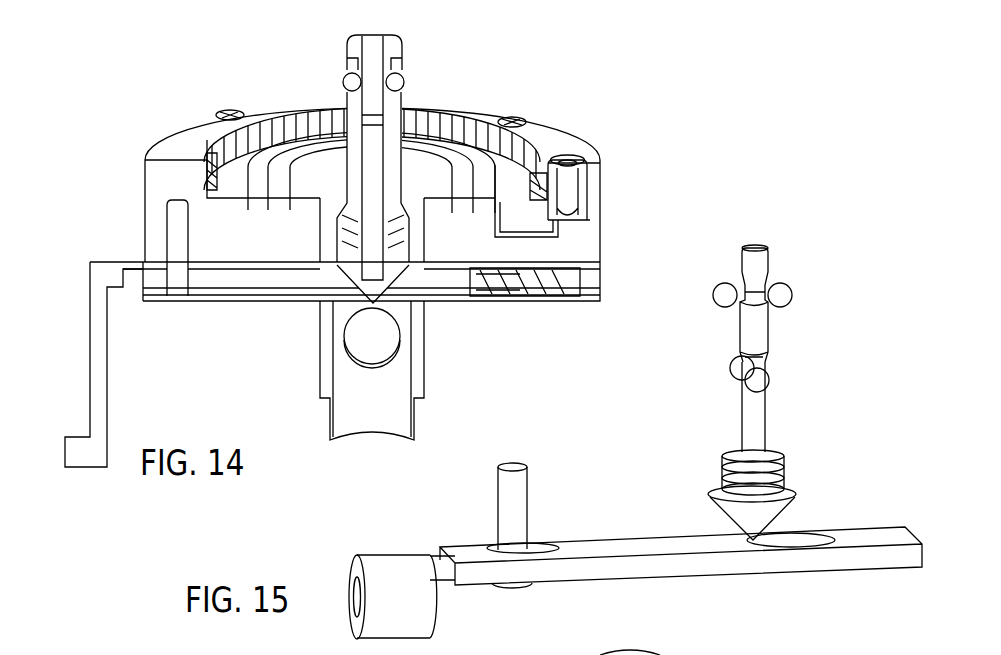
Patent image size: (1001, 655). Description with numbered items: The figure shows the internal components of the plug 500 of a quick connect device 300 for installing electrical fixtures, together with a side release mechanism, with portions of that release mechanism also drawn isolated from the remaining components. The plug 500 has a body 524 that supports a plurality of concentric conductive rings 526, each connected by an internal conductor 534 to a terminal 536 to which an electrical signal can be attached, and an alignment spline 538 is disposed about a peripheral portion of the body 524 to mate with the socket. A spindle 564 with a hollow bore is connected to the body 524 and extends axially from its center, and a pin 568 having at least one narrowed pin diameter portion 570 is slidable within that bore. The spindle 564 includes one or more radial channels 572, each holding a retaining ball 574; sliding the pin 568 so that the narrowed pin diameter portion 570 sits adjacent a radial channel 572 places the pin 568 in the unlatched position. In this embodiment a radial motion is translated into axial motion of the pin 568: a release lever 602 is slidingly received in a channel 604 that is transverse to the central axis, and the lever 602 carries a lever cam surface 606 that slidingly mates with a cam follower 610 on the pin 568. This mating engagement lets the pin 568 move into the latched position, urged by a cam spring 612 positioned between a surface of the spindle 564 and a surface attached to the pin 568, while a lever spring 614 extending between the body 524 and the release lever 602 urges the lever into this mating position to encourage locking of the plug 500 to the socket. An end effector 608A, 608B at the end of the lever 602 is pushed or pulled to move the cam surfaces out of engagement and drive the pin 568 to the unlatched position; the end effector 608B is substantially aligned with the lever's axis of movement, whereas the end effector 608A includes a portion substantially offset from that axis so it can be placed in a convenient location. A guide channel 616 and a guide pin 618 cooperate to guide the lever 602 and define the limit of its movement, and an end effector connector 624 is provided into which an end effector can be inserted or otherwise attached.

In FIG. 14, the quick connect device 300 is at (615, 95).
In FIG. 14, the plug 500 is at (618, 148).
In FIG. 14, the body 524 is at (592, 264).
In FIG. 14, the concentric conductive rings 526 is at (235, 175).
In FIG. 14, the internal conductor 534 is at (575, 238).
In FIG. 14, the terminal 536 is at (232, 108).
In FIG. 14, the alignment spline 538 is at (207, 133).
In FIG. 14, the spindle 564 is at (403, 52).
In FIG. 14, the pin 568 is at (345, 48).
In FIG. 15, the pin 568 is at (742, 415).
In FIG. 14, the narrowed pin diameter portion 570 is at (395, 115).
In FIG. 15, the narrowed pin diameter portion 570 is at (776, 272).
In FIG. 14, the radial channel 572 is at (415, 70).
In FIG. 14, the retaining ball 574 is at (342, 82).
In FIG. 15, the retaining ball 574 is at (722, 302).
In FIG. 14, the release lever 602 is at (268, 278).
In FIG. 15, the release lever 602 is at (603, 545).
In FIG. 14, the channel 604 is at (286, 302).
In FIG. 15, the channel 604 is at (590, 654).
In FIG. 14, the lever cam surface 606 is at (403, 293).
In FIG. 15, the lever cam surface 606 is at (715, 508).
In FIG. 14, the end effector 608A is at (100, 330).
In FIG. 15, the end effector 608B is at (383, 562).
In FIG. 14, the cam follower 610 is at (365, 303).
In FIG. 15, the cam spring 612 is at (792, 455).
In FIG. 14, the lever spring 614 is at (539, 305).
In FIG. 15, the guide channel 616 is at (542, 532).
In FIG. 15, the guide pin 618 is at (505, 522).
In FIG. 15, the end effector connector 624 is at (337, 612).